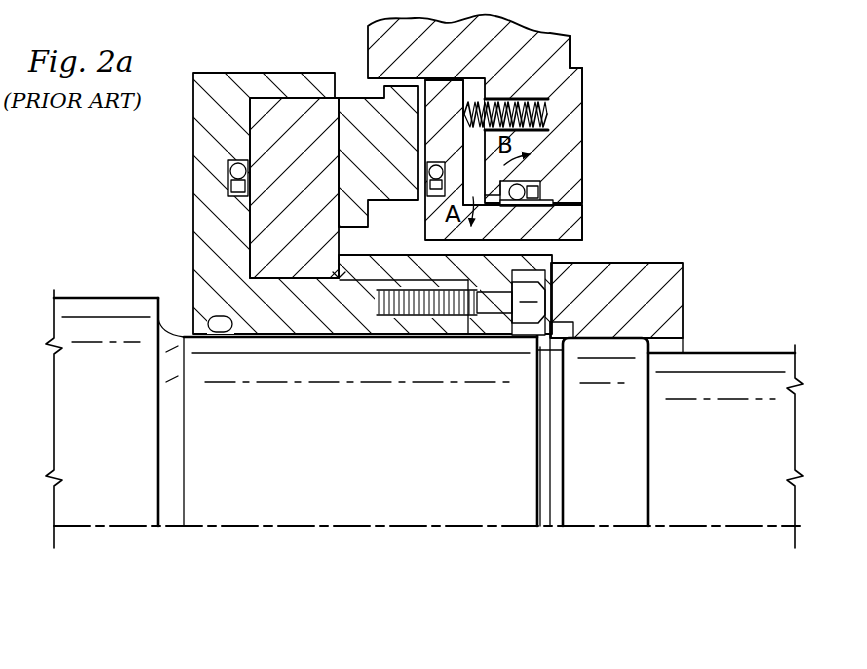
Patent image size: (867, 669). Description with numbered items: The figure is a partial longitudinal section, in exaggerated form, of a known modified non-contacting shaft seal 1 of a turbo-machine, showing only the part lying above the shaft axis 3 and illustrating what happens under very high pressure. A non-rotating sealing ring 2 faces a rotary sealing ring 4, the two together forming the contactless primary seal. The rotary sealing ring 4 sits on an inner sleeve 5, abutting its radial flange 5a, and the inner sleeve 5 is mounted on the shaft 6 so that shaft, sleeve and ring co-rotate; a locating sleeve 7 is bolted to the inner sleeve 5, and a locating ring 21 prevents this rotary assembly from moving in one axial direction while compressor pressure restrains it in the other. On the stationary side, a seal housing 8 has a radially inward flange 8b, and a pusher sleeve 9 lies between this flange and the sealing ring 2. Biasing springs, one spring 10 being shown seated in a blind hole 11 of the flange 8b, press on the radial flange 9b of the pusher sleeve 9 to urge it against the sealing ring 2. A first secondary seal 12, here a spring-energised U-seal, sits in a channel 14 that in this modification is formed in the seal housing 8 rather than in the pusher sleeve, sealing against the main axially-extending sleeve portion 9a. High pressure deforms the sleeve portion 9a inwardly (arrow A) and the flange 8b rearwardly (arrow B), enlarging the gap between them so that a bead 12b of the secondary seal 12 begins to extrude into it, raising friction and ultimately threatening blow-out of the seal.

The shaft seal 1 is at (705, 158).
The sealing ring 2 is at (351, 98).
The shaft axis 3 is at (352, 525).
The rotary sealing ring 4 is at (307, 107).
The inner sleeve 5 is at (193, 157).
The radial flange 5a is at (200, 212).
The shaft 6 is at (106, 297).
The locating sleeve 7 is at (348, 258).
The seal housing 8 is at (368, 30).
The radially inward flange 8b is at (582, 140).
The pusher sleeve 9 is at (427, 242).
The main axially-extending sleeve portion 9a is at (583, 240).
The radial flange 9b is at (450, 117).
The biasing spring 10 is at (582, 93).
The blind hole 11 is at (497, 100).
The first secondary seal 12 is at (545, 212).
The bead 12b is at (553, 201).
The channel 14 is at (540, 186).
The locating ring 21 is at (684, 270).